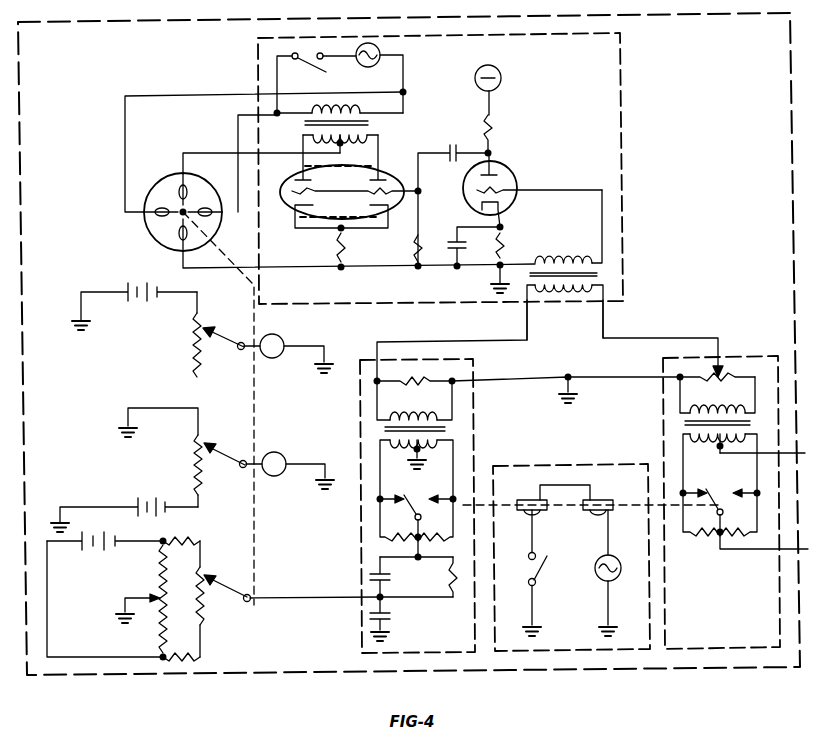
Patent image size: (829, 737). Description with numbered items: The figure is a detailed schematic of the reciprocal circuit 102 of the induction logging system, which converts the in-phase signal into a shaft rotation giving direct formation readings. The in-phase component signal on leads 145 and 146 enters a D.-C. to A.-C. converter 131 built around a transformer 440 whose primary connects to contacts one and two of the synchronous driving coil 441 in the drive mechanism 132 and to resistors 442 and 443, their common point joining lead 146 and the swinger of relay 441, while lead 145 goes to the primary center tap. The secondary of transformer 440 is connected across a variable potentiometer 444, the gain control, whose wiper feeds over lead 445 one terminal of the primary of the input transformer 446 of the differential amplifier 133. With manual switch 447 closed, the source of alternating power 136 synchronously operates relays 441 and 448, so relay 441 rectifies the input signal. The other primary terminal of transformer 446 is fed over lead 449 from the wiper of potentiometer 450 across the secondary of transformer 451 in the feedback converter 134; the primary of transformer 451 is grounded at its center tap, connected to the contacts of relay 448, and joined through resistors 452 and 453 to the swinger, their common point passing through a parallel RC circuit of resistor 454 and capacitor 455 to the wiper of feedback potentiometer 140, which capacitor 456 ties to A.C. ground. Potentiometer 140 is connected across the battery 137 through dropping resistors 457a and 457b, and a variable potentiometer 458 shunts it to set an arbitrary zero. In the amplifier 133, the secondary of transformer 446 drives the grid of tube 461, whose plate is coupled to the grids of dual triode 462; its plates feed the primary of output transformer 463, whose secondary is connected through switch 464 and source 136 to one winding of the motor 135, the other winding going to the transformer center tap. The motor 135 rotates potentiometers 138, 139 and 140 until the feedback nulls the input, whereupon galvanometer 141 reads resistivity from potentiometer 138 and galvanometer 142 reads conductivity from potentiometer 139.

The reciprocal circuit 102 is at (69, 677).
The D.-C. to A.-C. converter 131 is at (664, 364).
The drive mechanism 132 is at (605, 467).
The differential amplifier 133 is at (621, 106).
The second D.-C. to A.-C. converter 134 is at (361, 550).
The motor 135 is at (170, 176).
The source of alternating power 136 is at (383, 52).
The source of B+ potential 137 is at (141, 272).
The resistivity potentiometer 138 is at (188, 352).
The potentiometer 139 is at (196, 461).
The feedback potentiometer 140 is at (214, 604).
The galvanometer 141 is at (266, 338).
The galvanometer 142 is at (267, 454).
The lead 145 is at (783, 450).
The lead 146 is at (748, 550).
The transformer 440 is at (688, 414).
The synchronous driving coil 441 is at (594, 491).
The resistor 442 is at (705, 542).
The resistor 443 is at (752, 529).
The variable potentiometer 444 is at (728, 383).
The lead 445 is at (657, 332).
The input transformer 446 is at (600, 275).
The manual switch 447 is at (544, 549).
The driving relay 448 is at (534, 490).
The lead 449 is at (500, 328).
The variable potentiometer 450 is at (400, 388).
The transformer 451 is at (457, 433).
The resistor 452 is at (407, 530).
The resistor 453 is at (449, 536).
The resistor 454 is at (450, 578).
The capacitor 455 is at (365, 577).
The capacitor 456 is at (365, 624).
The dropping resistor 457a is at (185, 665).
The dropping resistor 457b is at (197, 529).
The variable potentiometer 458 is at (155, 592).
The tube 461 is at (505, 172).
The dual triode 462 is at (392, 165).
The output transformer 463 is at (303, 133).
The manually operable switch 464 is at (327, 70).